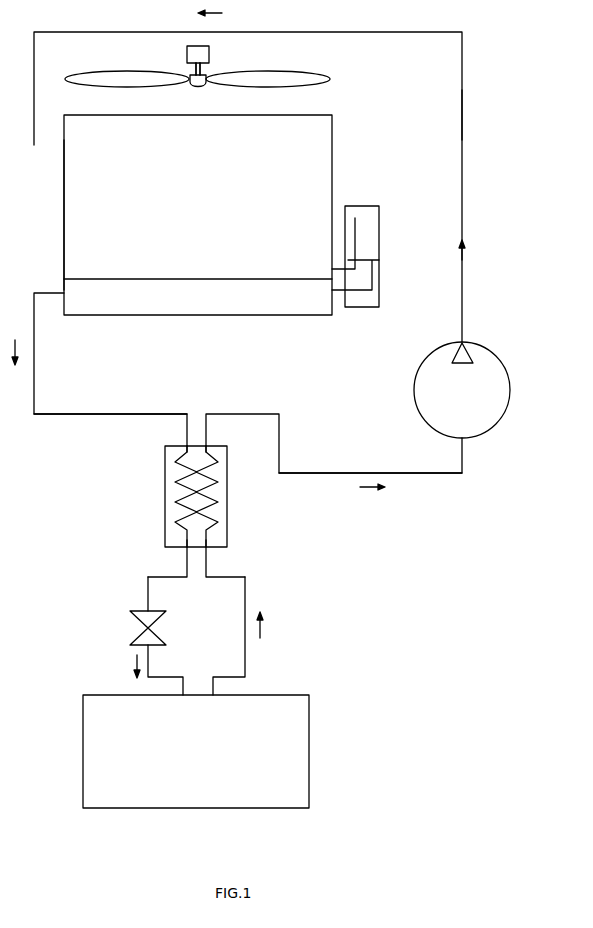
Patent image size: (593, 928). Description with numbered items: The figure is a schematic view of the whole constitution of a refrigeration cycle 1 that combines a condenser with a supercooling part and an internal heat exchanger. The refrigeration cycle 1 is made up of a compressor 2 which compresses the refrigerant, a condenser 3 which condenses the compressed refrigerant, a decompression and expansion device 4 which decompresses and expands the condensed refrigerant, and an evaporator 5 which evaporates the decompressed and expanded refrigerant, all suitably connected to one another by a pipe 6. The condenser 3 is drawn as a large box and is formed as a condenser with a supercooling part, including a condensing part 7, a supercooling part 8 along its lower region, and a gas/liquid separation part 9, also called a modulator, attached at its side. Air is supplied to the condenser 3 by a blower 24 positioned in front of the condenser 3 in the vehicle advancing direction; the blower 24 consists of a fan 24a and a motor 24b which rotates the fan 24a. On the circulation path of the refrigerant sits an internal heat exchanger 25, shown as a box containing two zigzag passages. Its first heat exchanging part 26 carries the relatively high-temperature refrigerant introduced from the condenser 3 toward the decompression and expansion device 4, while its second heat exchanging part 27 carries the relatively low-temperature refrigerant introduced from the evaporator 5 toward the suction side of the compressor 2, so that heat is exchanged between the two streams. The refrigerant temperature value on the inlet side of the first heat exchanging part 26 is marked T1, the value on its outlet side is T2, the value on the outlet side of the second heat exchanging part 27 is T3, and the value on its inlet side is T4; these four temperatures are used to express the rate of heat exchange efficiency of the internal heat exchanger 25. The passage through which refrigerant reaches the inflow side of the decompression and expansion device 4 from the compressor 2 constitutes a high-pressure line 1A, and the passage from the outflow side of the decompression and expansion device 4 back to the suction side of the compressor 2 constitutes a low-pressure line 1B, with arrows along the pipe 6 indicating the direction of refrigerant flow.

The refrigeration cycle 1 is at (464, 60).
The high-pressure line 1A is at (80, 415).
The low-pressure line 1B is at (436, 475).
The compressor 2 is at (489, 346).
The condenser 3 is at (336, 130).
The decompression and expansion device 4 is at (130, 620).
The evaporator 5 is at (310, 733).
The pipe 6 is at (463, 112).
The condensing part 7 is at (63, 212).
The supercooling part 8 is at (291, 305).
The gas/liquid separation part 9 is at (381, 221).
The blower 24 is at (213, 50).
The fan 24a is at (108, 76).
The motor 24b is at (187, 52).
The internal heat exchanger 25 is at (230, 473).
The first heat exchanging part 26 is at (178, 490).
The second heat exchanging part 27 is at (212, 500).
The refrigerant temperature value on inlet side of first heat exchanging part T1 is at (185, 445).
The refrigerant temperature value on outlet side of first heat exchanging part T2 is at (185, 548).
The refrigerant temperature value on outlet side of second heat exchanging part T3 is at (207, 445).
The refrigerant temperature value on inlet side of second heat exchanging part T4 is at (208, 548).